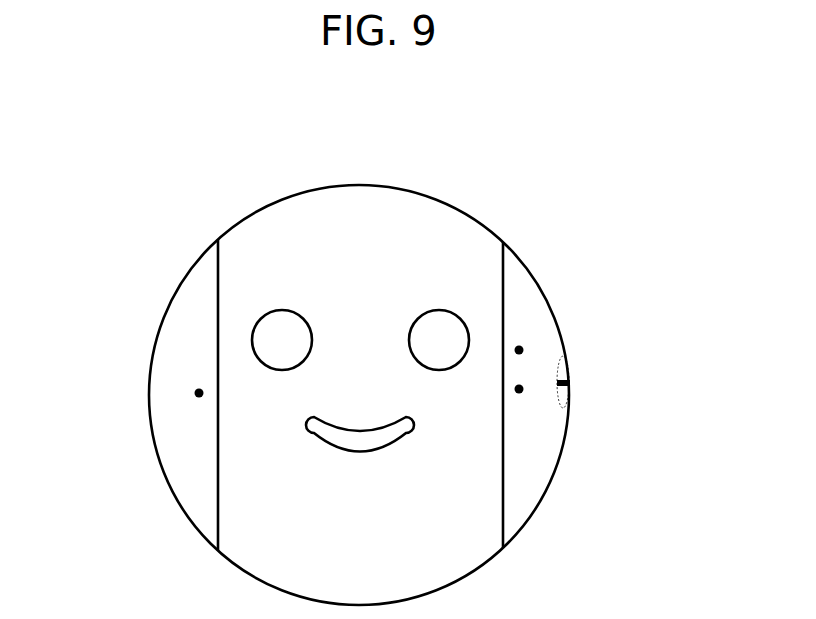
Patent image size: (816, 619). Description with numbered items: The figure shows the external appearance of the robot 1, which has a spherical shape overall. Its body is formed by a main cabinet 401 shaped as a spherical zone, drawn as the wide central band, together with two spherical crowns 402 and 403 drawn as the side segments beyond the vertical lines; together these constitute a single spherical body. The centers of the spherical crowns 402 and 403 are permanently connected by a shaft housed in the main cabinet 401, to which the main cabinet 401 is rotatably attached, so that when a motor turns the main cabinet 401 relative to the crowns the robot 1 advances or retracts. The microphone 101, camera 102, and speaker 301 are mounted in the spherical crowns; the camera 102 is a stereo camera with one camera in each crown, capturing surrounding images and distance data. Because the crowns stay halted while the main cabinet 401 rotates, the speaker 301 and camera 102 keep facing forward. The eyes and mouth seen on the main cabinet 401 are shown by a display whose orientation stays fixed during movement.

The robot 1 is at (382, 116).
The main cabinet 401 is at (435, 230).
The spherical crown 402 is at (527, 296).
The spherical crown 403 is at (200, 293).
The microphone 101 is at (519, 350).
The camera 102 is at (199, 393).
The speaker 301 is at (570, 383).